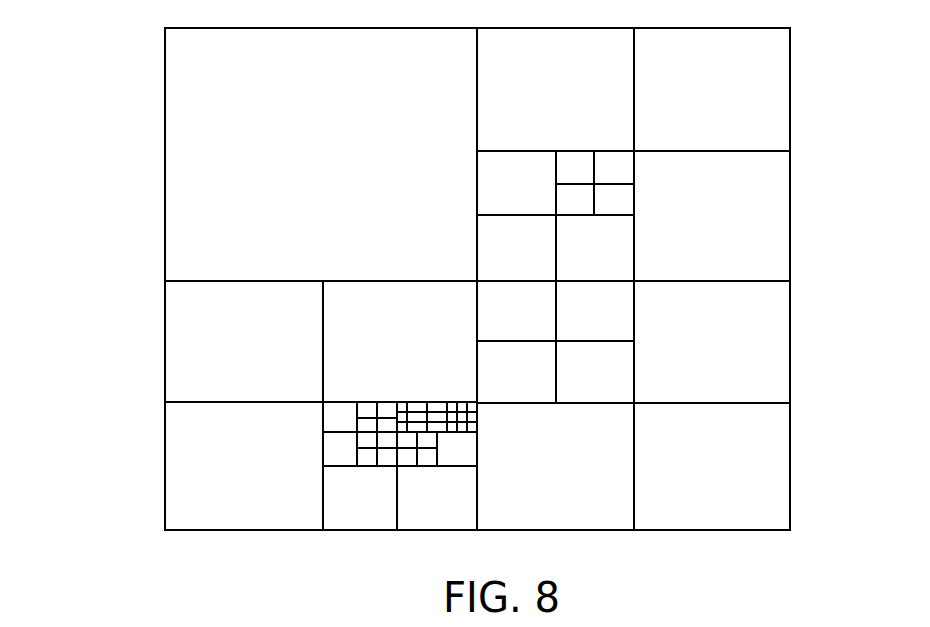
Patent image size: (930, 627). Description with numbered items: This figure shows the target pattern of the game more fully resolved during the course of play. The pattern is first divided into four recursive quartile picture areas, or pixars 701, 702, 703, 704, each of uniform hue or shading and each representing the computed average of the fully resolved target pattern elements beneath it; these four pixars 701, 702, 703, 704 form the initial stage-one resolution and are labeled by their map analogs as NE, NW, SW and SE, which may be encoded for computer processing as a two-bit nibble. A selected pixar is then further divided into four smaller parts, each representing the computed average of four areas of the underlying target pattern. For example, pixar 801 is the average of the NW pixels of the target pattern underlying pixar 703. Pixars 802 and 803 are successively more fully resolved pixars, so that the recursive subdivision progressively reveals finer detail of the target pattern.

The quartile picture area (pixar) 701 is at (803, 150).
The quartile picture area (pixar) 702 is at (186, 147).
The quartile picture area (pixar) 703 is at (153, 450).
The quartile picture area (pixar) 704 is at (807, 384).
The pixar 801 is at (244, 341).
The pixar 802 is at (467, 448).
The pixar 803 is at (365, 462).